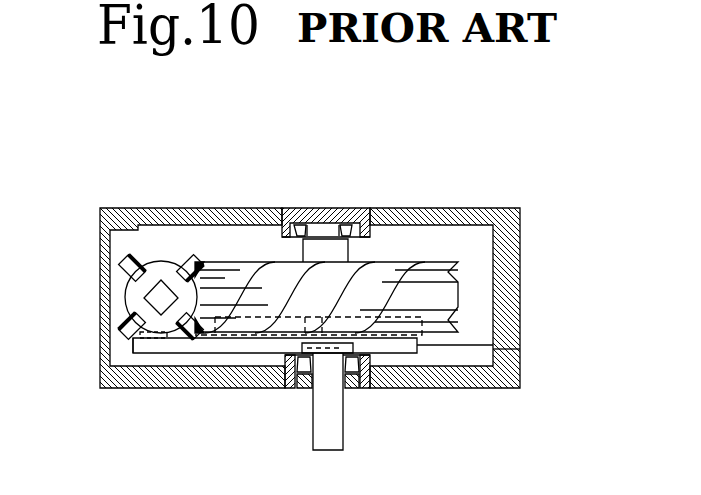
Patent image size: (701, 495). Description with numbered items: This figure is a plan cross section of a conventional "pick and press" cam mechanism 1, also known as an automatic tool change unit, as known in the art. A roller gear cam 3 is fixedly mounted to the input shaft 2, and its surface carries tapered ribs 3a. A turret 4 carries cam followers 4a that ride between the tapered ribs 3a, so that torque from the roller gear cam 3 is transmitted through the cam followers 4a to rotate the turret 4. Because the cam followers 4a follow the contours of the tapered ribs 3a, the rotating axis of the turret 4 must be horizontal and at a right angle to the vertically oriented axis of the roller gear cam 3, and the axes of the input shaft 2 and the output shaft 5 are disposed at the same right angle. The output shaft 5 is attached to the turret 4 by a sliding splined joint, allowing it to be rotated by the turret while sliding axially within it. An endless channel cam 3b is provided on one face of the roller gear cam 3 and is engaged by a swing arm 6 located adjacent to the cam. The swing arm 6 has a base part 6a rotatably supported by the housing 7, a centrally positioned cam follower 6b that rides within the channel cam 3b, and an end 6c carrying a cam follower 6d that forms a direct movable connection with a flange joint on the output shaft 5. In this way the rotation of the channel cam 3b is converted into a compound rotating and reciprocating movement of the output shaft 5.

The rack and pinion steering gear (prior art) 1 is at (486, 186).
The input shaft 2 is at (340, 428).
The roller gear cam 3 is at (450, 296).
The tapered ribs 3a is at (398, 263).
The endless channel cam 3b is at (413, 388).
The turret 4 is at (157, 273).
The cam followers 4a is at (177, 265).
The output shaft 5 is at (124, 292).
The swing arm 6 is at (262, 347).
The base part 6a is at (519, 350).
The cam follower 6b is at (303, 317).
The end of the swing arm 6c is at (133, 346).
The cam follower 6d is at (157, 338).
The housing 7 is at (507, 232).